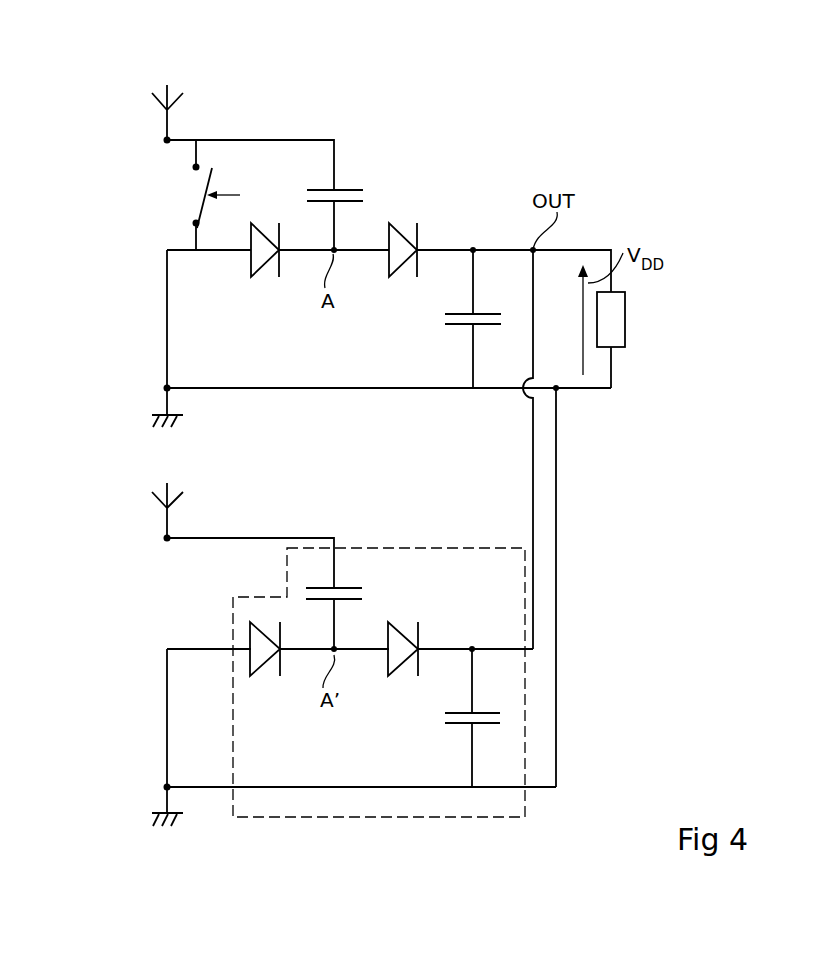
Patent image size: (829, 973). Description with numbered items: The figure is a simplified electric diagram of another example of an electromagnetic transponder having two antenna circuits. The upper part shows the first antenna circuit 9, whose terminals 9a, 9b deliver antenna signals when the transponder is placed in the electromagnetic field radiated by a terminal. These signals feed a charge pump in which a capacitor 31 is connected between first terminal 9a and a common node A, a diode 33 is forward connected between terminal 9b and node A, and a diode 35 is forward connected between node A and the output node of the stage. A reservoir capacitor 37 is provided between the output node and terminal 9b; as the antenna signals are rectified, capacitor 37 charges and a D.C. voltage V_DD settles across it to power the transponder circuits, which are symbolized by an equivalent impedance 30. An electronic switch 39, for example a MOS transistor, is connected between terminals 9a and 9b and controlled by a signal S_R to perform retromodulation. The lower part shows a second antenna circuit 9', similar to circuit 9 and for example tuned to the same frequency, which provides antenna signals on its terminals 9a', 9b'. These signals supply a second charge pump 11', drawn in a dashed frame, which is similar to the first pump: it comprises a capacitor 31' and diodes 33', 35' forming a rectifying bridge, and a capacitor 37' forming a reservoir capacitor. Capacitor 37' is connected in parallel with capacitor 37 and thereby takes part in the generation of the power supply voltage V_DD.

The antenna circuit 9 is at (167, 72).
The first terminal of antenna circuit 9a is at (128, 125).
The second terminal of antenna circuit 9b is at (124, 390).
The electronic switch 39 is at (207, 195).
The capacitor 31 is at (372, 182).
The diode 33 is at (271, 282).
The diode 35 is at (400, 281).
The capacitor 37 is at (459, 342).
The equivalent impedance 30 is at (612, 322).
The second antenna circuit 9' is at (192, 479).
The terminal of second antenna circuit 9a' is at (127, 522).
The terminal of second antenna circuit 9b' is at (124, 788).
The capacitor 31' is at (374, 579).
The diode 33' is at (274, 681).
The diode 35' is at (400, 677).
The capacitor 37' is at (459, 740).
The charge pump 11' is at (379, 704).